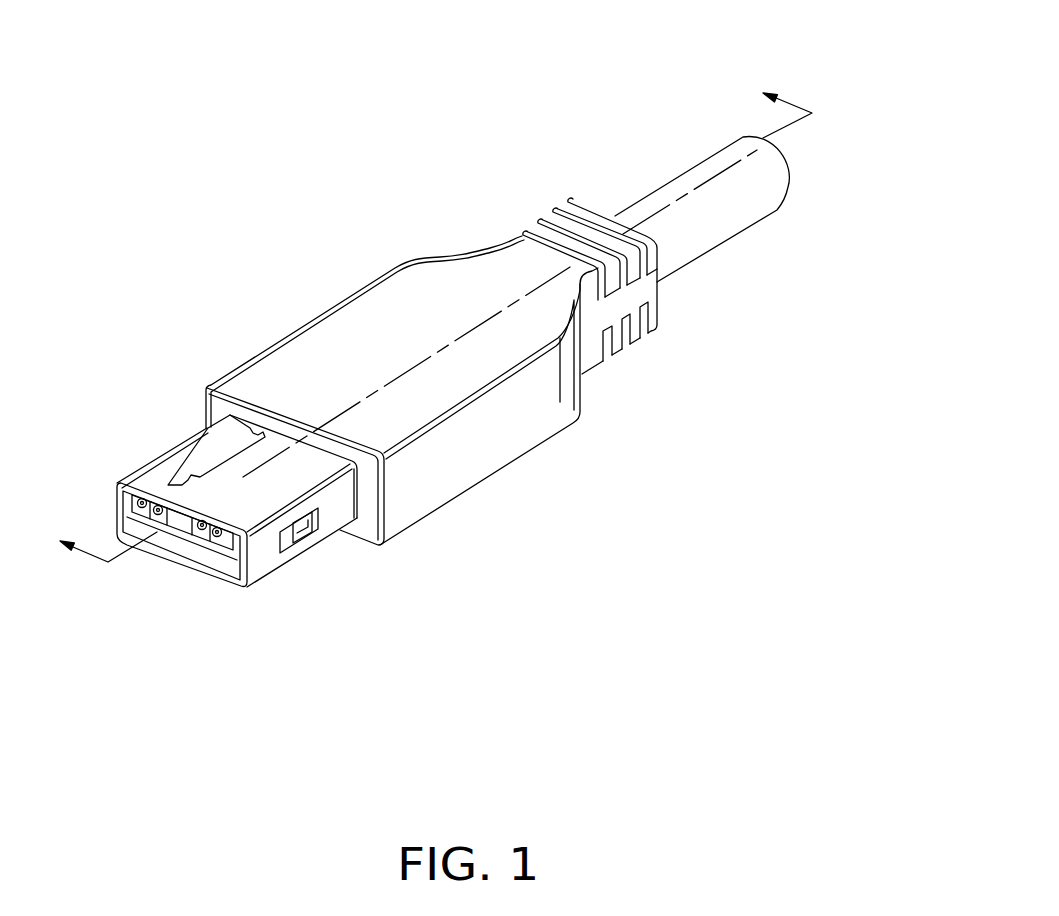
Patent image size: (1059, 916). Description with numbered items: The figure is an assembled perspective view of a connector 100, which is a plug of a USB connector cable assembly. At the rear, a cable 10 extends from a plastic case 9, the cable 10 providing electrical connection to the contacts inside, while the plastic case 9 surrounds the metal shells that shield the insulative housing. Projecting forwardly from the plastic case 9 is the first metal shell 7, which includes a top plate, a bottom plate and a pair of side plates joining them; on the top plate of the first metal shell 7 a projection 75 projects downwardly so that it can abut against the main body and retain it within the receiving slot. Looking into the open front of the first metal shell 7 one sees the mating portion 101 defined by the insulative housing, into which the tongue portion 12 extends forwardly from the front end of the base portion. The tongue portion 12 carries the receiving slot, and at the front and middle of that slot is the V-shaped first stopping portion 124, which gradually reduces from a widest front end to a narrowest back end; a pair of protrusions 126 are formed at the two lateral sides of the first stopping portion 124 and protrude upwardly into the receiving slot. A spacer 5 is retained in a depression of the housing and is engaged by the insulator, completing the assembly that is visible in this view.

The connector 100 is at (443, 38).
The plastic case 9 is at (384, 288).
The cable 10 is at (710, 233).
The first metal shell 7 is at (177, 460).
The projection 75 is at (172, 490).
The tongue portion 12 is at (240, 542).
The V-shaped first stopping portion 124 is at (180, 523).
The protrusions 126 is at (201, 533).
The mating portion 101 is at (188, 552).
The spacer 5 is at (432, 328).